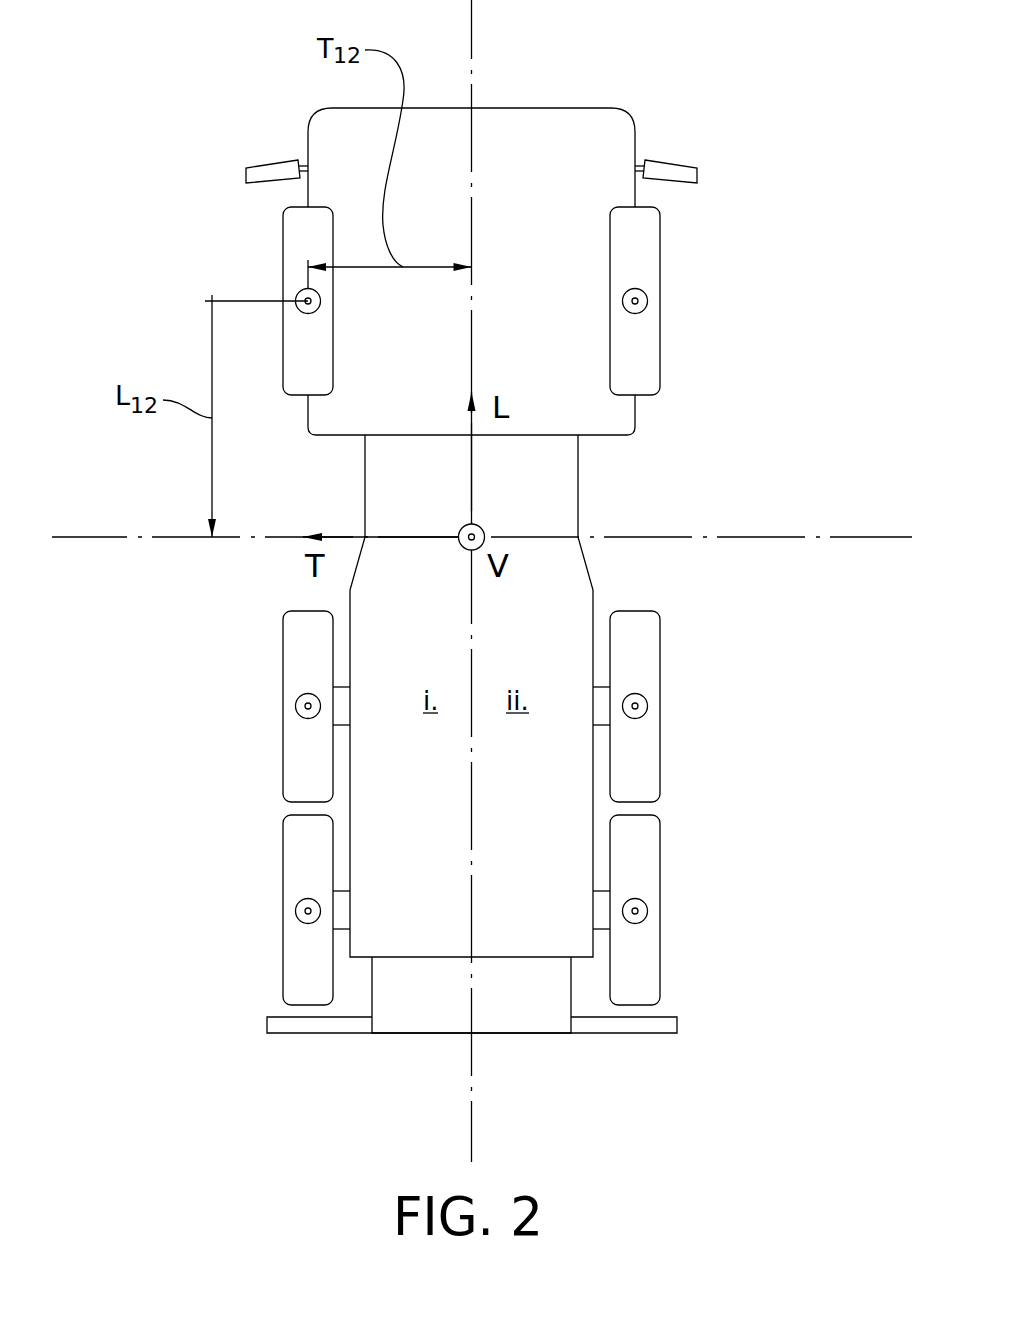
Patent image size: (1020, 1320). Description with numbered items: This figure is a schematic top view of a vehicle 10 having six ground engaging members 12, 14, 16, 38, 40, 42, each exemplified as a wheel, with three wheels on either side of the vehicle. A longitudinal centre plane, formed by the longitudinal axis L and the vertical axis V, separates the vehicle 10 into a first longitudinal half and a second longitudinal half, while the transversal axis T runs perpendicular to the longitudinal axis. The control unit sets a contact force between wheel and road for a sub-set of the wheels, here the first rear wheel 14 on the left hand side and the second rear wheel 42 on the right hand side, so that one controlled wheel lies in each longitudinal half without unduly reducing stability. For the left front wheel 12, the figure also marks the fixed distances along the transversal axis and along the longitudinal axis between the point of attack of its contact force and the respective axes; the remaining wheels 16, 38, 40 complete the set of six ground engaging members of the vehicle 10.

The vehicle 10 is at (152, 148).
The left front wheel 12 is at (305, 243).
The first rear wheel 14 is at (305, 656).
The ground engaging member 16 is at (305, 860).
The ground engaging member 38 is at (638, 243).
The ground engaging member 40 is at (638, 656).
The second rear wheel 42 is at (638, 860).